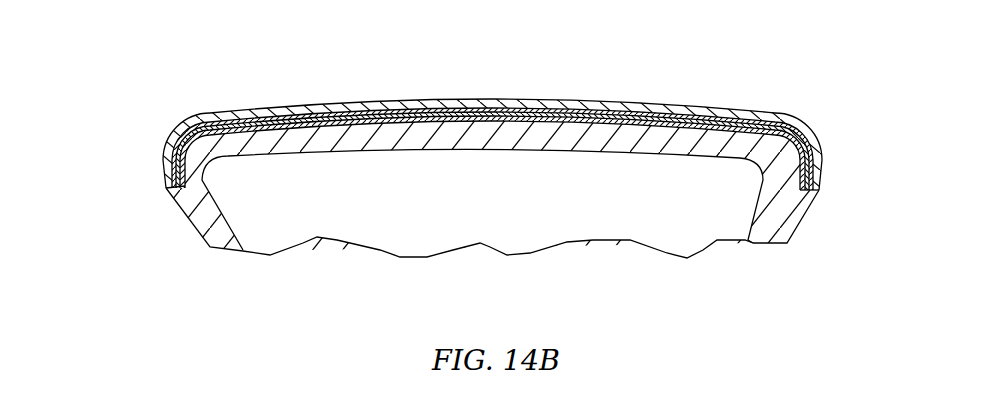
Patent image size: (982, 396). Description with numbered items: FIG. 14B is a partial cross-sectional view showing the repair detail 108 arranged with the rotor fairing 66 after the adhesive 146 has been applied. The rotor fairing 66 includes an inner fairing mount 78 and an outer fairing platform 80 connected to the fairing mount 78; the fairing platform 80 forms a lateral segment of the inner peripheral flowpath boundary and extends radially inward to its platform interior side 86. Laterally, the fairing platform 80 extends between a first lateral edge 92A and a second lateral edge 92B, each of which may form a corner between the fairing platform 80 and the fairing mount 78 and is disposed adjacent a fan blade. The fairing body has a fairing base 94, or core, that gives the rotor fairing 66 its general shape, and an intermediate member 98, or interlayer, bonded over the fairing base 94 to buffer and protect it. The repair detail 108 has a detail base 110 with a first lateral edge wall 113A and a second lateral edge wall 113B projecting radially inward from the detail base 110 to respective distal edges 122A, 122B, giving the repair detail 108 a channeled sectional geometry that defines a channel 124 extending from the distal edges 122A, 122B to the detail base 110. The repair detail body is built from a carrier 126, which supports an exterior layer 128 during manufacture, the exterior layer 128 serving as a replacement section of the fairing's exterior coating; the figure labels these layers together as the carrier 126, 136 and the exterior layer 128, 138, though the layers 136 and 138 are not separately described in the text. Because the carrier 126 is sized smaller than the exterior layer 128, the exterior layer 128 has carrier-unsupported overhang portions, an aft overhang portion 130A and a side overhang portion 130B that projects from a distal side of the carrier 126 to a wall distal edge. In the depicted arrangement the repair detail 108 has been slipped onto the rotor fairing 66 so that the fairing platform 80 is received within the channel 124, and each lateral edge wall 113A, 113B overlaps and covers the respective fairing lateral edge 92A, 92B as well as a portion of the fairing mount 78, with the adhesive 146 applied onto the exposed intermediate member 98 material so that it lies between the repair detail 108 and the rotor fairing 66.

The rotor fairing 66 is at (768, 122).
The inner fairing mount 78 is at (222, 262).
The outer fairing platform 80 is at (350, 157).
The platform interior side 86 is at (482, 199).
The first lateral edge 92A is at (158, 133).
The second lateral edge 92B is at (827, 132).
The fairing base 94 is at (415, 138).
The intermediate member 98 is at (492, 109).
The repair detail 108 is at (277, 100).
The detail base 110 is at (427, 98).
The first lateral edge wall 113A is at (157, 170).
The second lateral edge wall 113B is at (831, 157).
The distal edge 122A is at (168, 196).
The distal edge 122B is at (814, 195).
The channel 124 is at (168, 187).
The carrier 126 is at (492, 116).
The first bonding layer 136 is at (578, 115).
The exterior layer 128 is at (492, 106).
The second bonding layer 138 is at (515, 107).
The aft overhang portion 130A is at (826, 185).
The side overhang portion 130B is at (158, 152).
The adhesive 146 is at (693, 118).